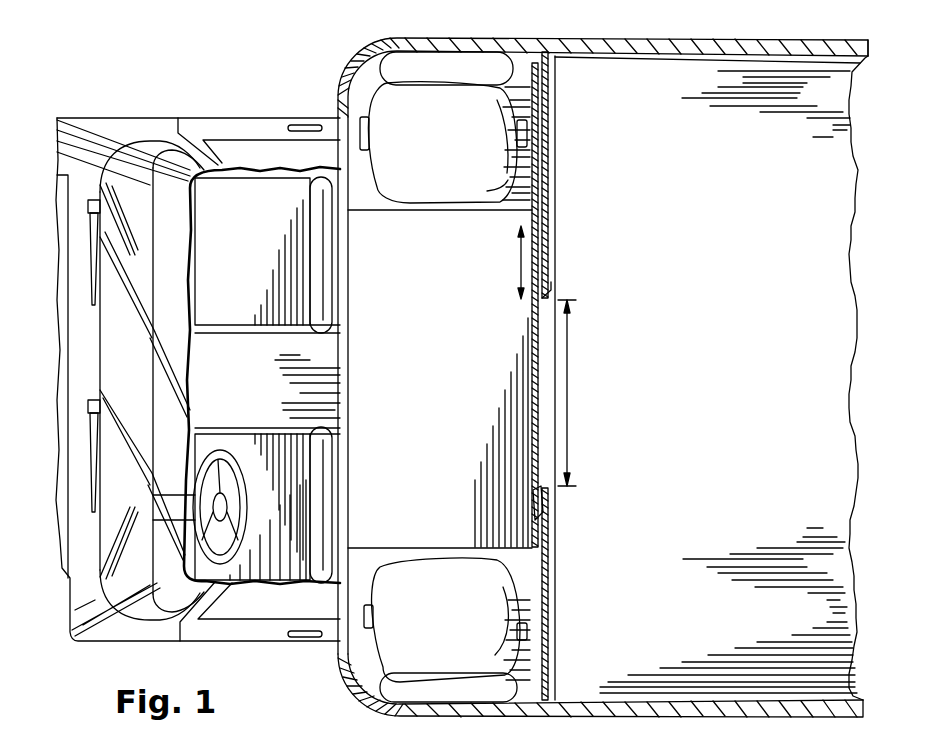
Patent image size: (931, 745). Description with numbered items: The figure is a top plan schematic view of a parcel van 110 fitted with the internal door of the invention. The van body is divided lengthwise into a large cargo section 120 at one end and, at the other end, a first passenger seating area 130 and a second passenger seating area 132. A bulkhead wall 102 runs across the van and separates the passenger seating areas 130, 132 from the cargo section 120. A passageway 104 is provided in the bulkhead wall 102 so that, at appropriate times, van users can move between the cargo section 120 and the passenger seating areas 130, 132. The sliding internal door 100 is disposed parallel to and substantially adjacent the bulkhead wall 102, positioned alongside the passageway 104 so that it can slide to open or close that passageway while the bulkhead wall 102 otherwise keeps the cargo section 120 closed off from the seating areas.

The sliding internal door 100 is at (530, 334).
The bulkhead wall 102 is at (555, 117).
The passageway 104 is at (568, 372).
The parcel van 110 is at (581, 37).
The cargo section 120 is at (718, 341).
The first passenger seating area 130 is at (263, 396).
The second passenger seating area 132 is at (417, 371).